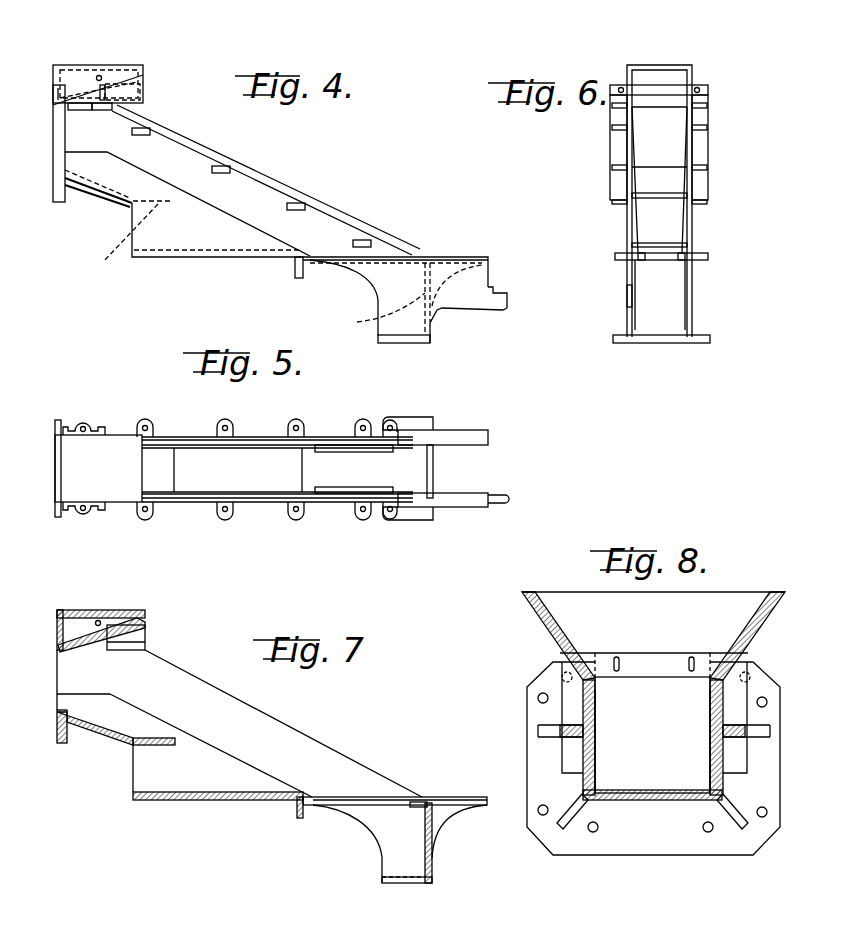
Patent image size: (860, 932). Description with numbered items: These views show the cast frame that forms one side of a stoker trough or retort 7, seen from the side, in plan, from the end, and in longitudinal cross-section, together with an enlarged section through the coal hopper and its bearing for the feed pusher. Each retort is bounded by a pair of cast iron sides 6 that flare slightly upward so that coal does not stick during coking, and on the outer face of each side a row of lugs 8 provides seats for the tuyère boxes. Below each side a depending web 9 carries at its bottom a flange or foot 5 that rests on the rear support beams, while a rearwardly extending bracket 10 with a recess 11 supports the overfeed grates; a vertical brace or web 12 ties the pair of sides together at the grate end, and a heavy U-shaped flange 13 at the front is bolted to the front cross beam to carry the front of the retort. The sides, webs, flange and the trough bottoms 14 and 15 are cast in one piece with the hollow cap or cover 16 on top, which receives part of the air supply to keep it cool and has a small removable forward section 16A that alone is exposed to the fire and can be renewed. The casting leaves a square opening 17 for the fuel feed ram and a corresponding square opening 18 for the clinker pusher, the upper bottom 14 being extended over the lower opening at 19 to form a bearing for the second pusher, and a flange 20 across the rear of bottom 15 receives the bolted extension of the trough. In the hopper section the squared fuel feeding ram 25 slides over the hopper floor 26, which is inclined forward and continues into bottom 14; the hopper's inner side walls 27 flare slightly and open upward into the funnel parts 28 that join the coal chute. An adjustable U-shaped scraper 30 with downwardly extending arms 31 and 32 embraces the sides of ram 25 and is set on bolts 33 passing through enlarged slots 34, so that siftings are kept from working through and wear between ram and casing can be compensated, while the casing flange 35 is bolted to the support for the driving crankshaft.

In FIG. 4, the flange or foot 5 is at (378, 340).
In FIG. 5, the flange or foot 5 is at (420, 420).
In FIG. 6, the flange or foot 5 is at (705, 343).
In FIG. 7, the flange or foot 5 is at (384, 882).
In FIG. 4, the sides 6 is at (278, 191).
In FIG. 5, the sides 6 is at (262, 437).
In FIG. 6, the sides 6 is at (683, 232).
In FIG. 7, the sides 6 is at (282, 723).
In FIG. 7, the trough or retort 7 is at (185, 692).
In FIG. 4, the lugs 8 is at (150, 132).
In FIG. 5, the lugs 8 is at (145, 420).
In FIG. 6, the lugs 8 is at (614, 124).
In FIG. 4, the depending web 9 is at (377, 291).
In FIG. 7, the depending web 9 is at (378, 812).
In FIG. 4, the bracket 10 is at (470, 300).
In FIG. 6, the bracket 10 is at (627, 298).
In FIG. 4, the recess 11 is at (498, 290).
In FIG. 4, the vertical brace or web 12 is at (376, 299).
In FIG. 5, the vertical brace or web 12 is at (435, 470).
In FIG. 7, the vertical brace or web 12 is at (425, 834).
In FIG. 4, the U-shaped flange 13 is at (53, 190).
In FIG. 7, the U-shaped flange 13 is at (56, 744).
In FIG. 4, the trough bottom (upper portion) 14 is at (114, 198).
In FIG. 7, the trough bottom (upper portion) 14 is at (103, 739).
In FIG. 4, the trough bottom (lower portion) 15 is at (210, 259).
In FIG. 7, the trough bottom (lower portion) 15 is at (221, 801).
In FIG. 4, the cap or cover 16 is at (55, 73).
In FIG. 5, the cap or cover 16 is at (56, 478).
In FIG. 7, the cap or cover 16 is at (62, 610).
In FIG. 4, the removable forward section 16A is at (130, 93).
In FIG. 7, the removable forward section 16A is at (135, 635).
In FIG. 7, the opening for fuel feed ram 17 is at (67, 677).
In FIG. 7, the opening for clinker pusher 18 is at (133, 777).
In FIG. 4, the bearing extension 19 is at (126, 248).
In FIG. 5, the bearing extension 19 is at (176, 490).
In FIG. 7, the bearing extension 19 is at (160, 740).
In FIG. 4, the flange 20 is at (297, 276).
In FIG. 7, the flange 20 is at (298, 817).
In FIG. 8, the fuel feeding ram 25 is at (623, 745).
In FIG. 8, the hopper floor 26 is at (647, 792).
In FIG. 8, the flared inner side walls 27 is at (582, 708).
In FIG. 8, the funnel parts 28 is at (540, 620).
In FIG. 8, the U-shaped scraper 30 is at (650, 663).
In FIG. 8, the scraper arm 31 is at (596, 697).
In FIG. 8, the scraper arm 32 is at (712, 689).
In FIG. 8, the bolts 33 is at (614, 657).
In FIG. 8, the enlarged slots 34 is at (617, 657).
In FIG. 8, the flange 35 is at (628, 857).